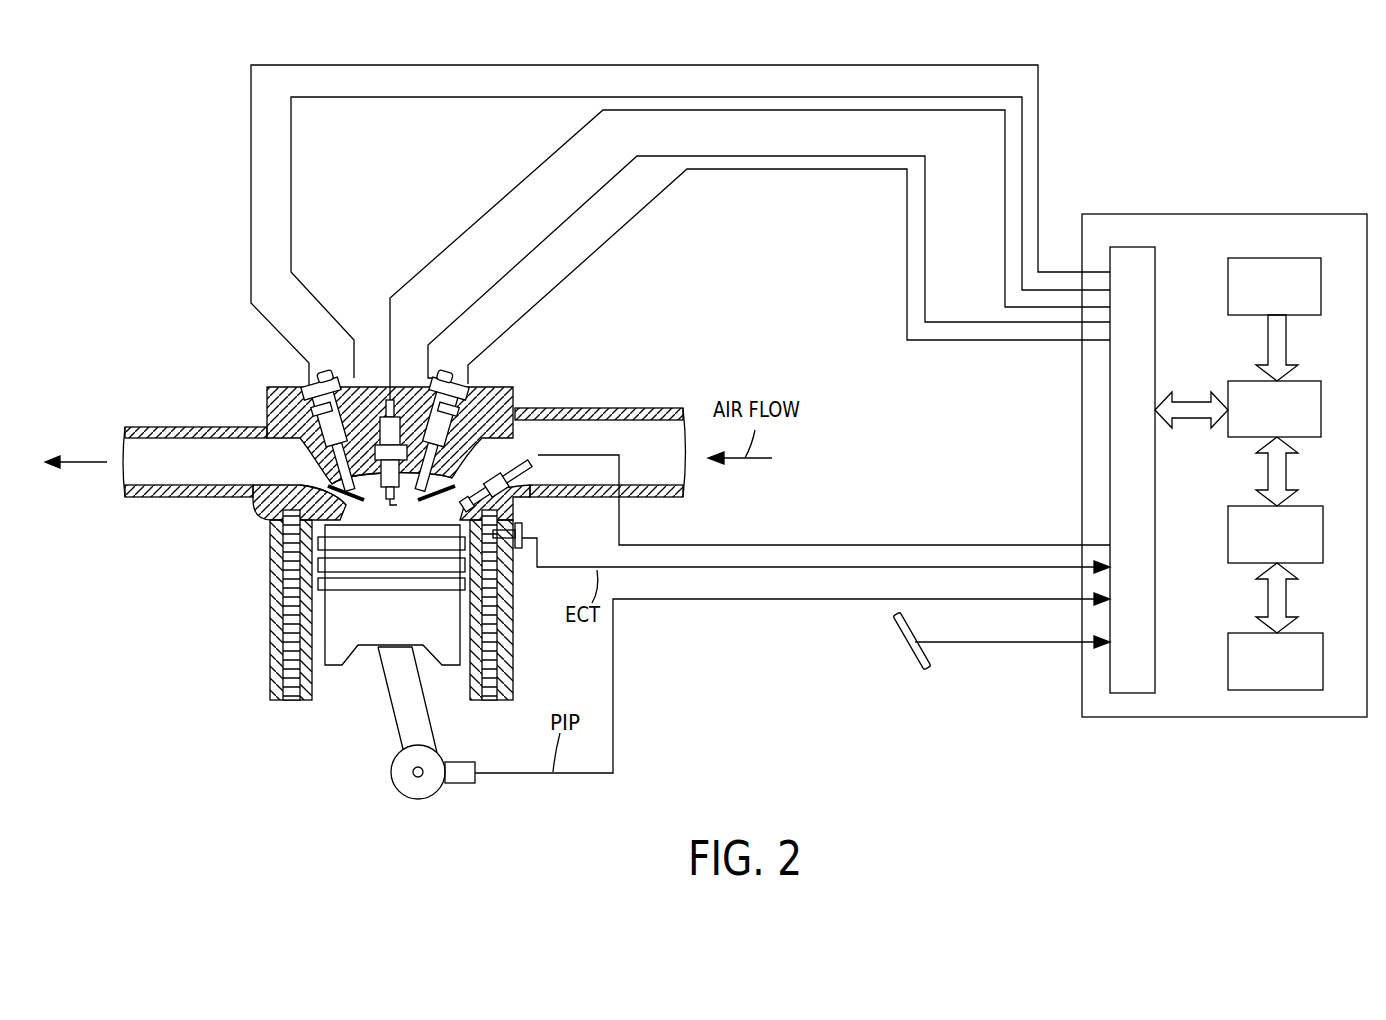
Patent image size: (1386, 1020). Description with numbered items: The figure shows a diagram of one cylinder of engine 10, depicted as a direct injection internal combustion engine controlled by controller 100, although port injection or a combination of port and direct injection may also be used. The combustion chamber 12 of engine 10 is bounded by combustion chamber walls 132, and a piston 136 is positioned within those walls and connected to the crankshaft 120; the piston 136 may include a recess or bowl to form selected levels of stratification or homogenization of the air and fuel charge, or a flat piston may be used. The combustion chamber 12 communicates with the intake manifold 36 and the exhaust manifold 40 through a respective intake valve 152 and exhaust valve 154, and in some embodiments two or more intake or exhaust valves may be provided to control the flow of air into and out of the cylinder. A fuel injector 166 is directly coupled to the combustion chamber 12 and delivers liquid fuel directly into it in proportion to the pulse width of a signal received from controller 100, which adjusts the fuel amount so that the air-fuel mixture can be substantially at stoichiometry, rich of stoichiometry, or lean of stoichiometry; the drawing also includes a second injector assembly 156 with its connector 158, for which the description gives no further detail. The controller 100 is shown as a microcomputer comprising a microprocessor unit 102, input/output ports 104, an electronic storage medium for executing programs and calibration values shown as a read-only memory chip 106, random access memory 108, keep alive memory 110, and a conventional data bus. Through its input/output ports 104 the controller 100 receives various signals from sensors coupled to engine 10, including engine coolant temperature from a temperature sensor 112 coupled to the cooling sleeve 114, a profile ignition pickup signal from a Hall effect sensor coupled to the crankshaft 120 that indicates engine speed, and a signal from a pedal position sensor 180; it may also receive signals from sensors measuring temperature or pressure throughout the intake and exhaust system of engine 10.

The engine 10 is at (272, 375).
The combustion chamber 12 is at (377, 512).
The intake manifold 36 is at (608, 450).
The exhaust manifold 40 is at (220, 473).
The controller 100 is at (1305, 214).
The microprocessor unit 102 is at (1298, 381).
The input/output ports 104 is at (1155, 263).
The read-only memory chip 106 is at (1298, 258).
The random access memory 108 is at (1298, 506).
The keep alive memory 110 is at (1298, 633).
The temperature sensor 112 is at (525, 534).
The cooling sleeve 114 is at (385, 643).
The crankshaft 120 is at (403, 780).
The combustion chamber walls 132 is at (313, 692).
The piston 136 is at (375, 648).
The intake valve 152 is at (483, 468).
The exhaust valve 154 is at (335, 478).
The fuel injector 156 is at (334, 377).
The injector connector 158 is at (343, 368).
The fuel injector 166 is at (386, 398).
The pedal position sensor 180 is at (902, 642).